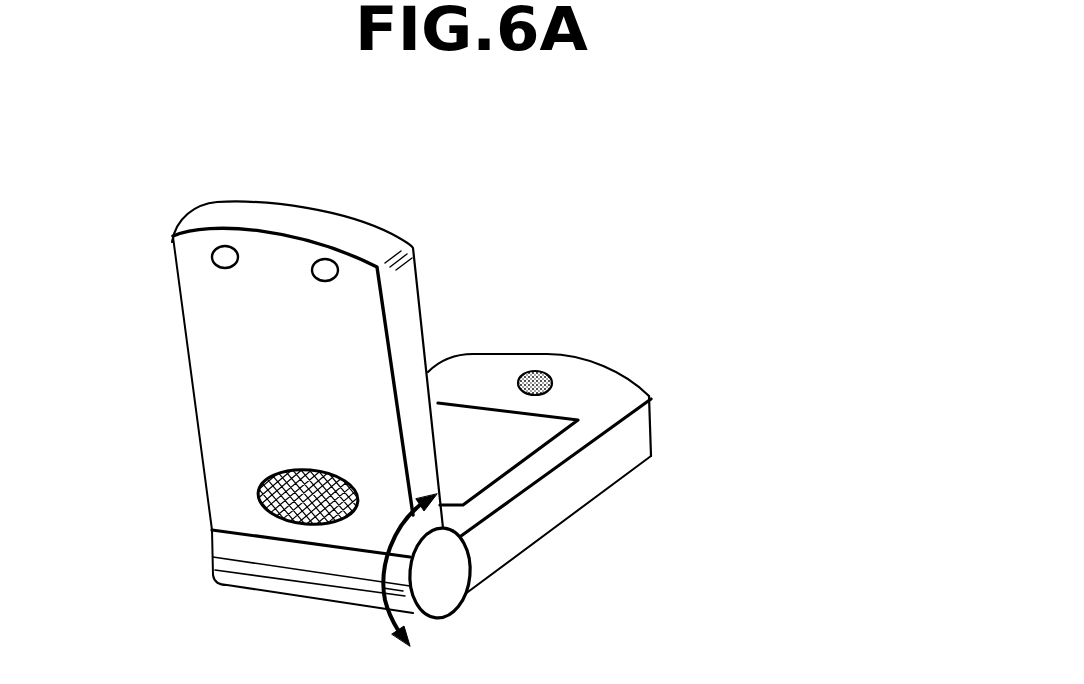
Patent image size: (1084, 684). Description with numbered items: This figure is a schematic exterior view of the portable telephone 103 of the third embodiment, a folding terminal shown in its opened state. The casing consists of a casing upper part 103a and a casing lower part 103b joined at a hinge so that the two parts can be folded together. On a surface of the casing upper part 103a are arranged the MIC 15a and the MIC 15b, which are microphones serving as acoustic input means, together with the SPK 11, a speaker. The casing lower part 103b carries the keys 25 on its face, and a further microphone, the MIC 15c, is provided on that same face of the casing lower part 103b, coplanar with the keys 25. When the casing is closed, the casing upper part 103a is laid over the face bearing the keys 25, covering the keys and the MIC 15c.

The portable telephone 103 is at (289, 160).
The casing upper part 103a is at (406, 263).
The casing lower part 103b is at (447, 357).
The MIC 15a is at (327, 262).
The MIC 15b is at (220, 258).
The MIC 15c is at (540, 379).
The SPK 11 is at (268, 472).
The keys 25 is at (500, 460).